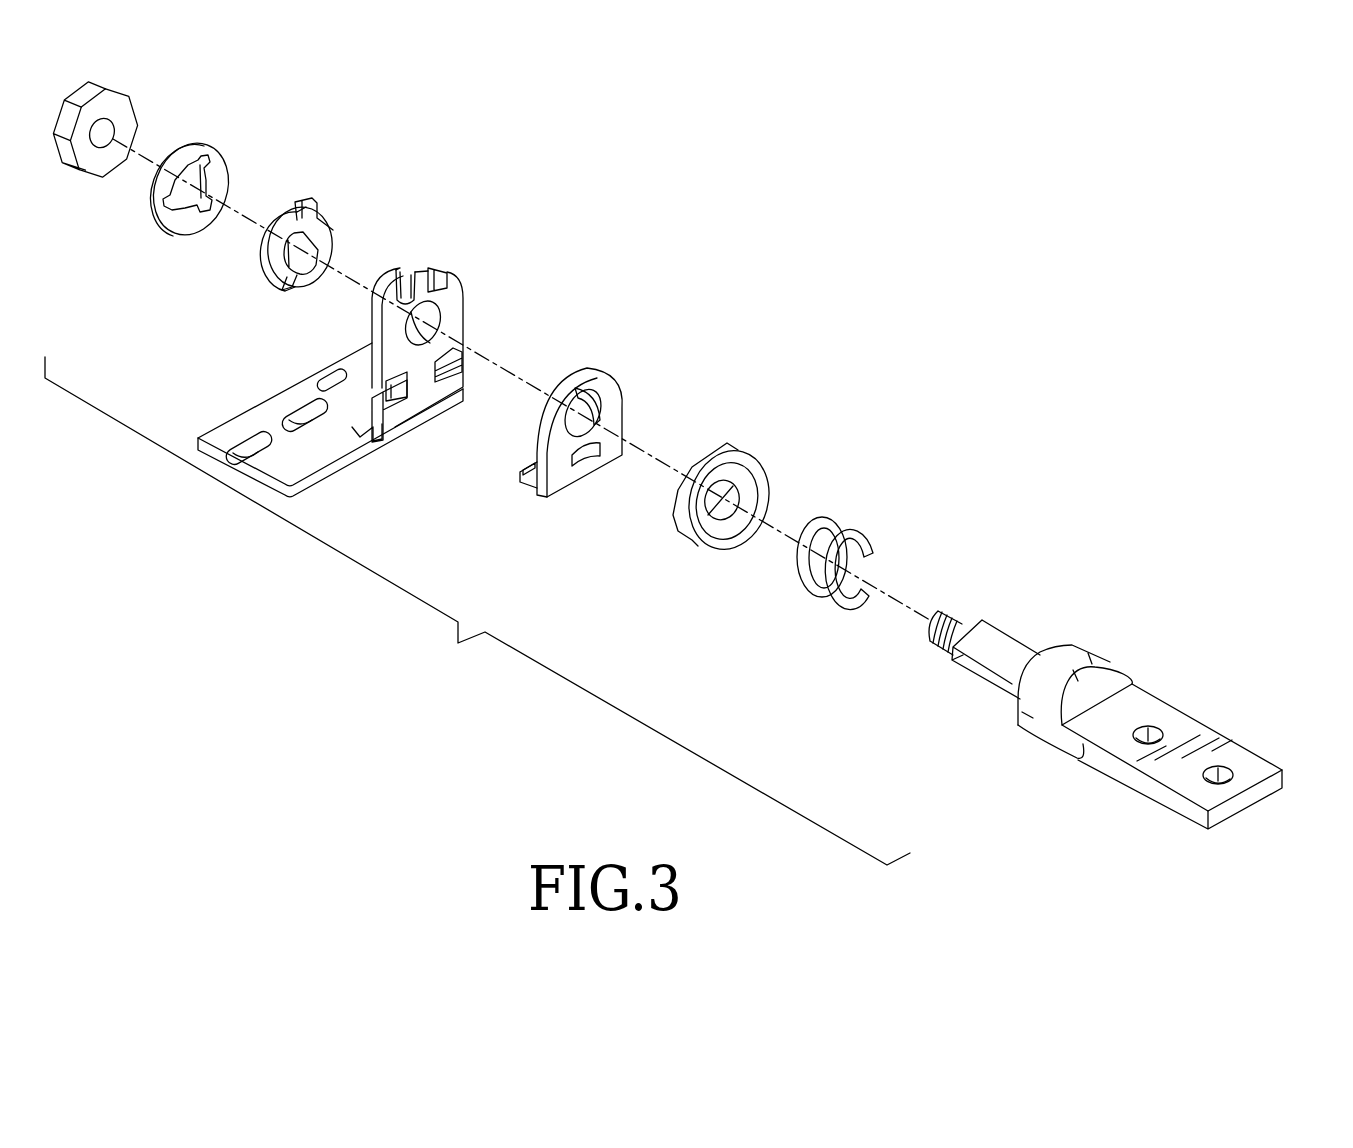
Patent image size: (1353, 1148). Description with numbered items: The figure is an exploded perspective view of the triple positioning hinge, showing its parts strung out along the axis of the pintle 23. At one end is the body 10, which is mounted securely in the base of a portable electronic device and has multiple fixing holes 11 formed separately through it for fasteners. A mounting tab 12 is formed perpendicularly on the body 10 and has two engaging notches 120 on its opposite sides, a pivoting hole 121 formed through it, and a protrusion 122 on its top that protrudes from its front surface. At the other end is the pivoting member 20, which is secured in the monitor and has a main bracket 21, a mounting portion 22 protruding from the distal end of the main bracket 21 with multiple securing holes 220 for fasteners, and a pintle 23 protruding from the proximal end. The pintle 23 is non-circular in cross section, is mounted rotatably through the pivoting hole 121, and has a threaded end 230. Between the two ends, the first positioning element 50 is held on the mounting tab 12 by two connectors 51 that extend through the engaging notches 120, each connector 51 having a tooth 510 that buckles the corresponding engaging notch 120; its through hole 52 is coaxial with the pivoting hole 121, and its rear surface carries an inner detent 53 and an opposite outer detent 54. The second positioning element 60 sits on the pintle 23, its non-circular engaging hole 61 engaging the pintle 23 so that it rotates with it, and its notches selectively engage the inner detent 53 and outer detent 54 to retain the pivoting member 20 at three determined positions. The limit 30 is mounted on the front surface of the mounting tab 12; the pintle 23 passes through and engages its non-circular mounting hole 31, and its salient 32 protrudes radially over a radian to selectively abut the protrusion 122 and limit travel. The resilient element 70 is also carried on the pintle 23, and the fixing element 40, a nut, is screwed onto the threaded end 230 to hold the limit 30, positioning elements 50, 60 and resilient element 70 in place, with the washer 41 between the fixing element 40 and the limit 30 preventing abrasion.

The body 10 is at (350, 367).
The fixing holes 11 is at (232, 447).
The mounting tab 12 is at (456, 343).
The engaging notches 120 is at (393, 397).
The pivoting hole 121 is at (436, 322).
The protrusion 122 is at (414, 268).
The pivoting member 20 is at (1091, 711).
The main bracket 21 is at (1092, 656).
The mounting portion 22 is at (1191, 748).
The securing holes 220 is at (1224, 770).
The pintle 23 is at (1000, 630).
The threaded end 230 is at (930, 640).
The limit 30 is at (301, 256).
The mounting hole 31 is at (292, 288).
The salient 32 is at (330, 216).
The fixing element 40 is at (122, 110).
The washer 41 is at (217, 160).
The first positioning element 50 is at (564, 420).
The connectors 51 is at (493, 481).
The tooth 510 is at (527, 467).
The hole 52 is at (598, 410).
The inner detent 53 is at (597, 385).
The outer detent 54 is at (590, 462).
The second positioning element 60 is at (743, 492).
The engaging hole 61 is at (735, 497).
The resilient element 70 is at (851, 540).